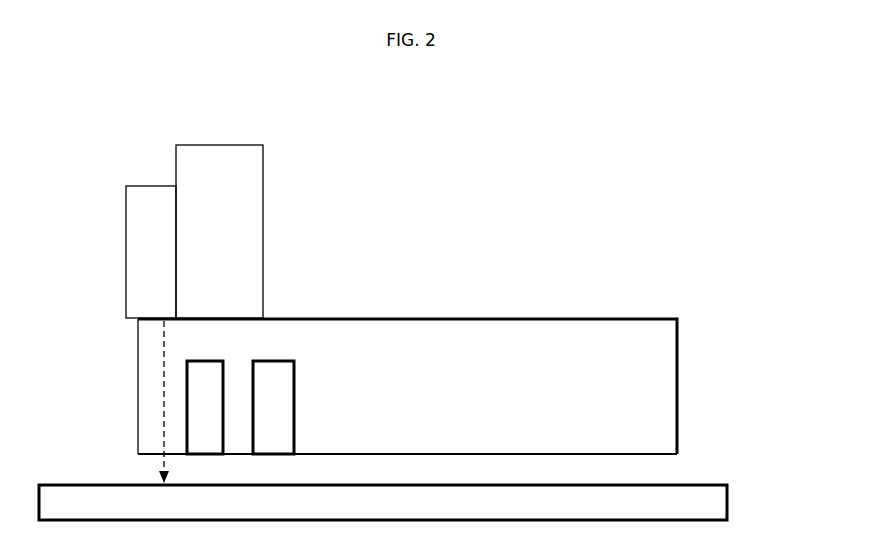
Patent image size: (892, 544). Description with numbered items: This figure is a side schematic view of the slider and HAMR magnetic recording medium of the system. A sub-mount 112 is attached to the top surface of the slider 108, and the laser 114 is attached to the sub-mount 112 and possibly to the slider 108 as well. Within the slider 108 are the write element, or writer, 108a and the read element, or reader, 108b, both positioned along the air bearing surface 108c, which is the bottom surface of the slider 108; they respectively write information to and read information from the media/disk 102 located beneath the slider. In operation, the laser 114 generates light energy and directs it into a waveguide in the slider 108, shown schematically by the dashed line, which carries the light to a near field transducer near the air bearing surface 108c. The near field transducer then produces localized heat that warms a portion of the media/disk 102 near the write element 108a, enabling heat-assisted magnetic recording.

The media/disk 102 is at (727, 500).
The slider 108 is at (600, 319).
The write element 108a is at (191, 360).
The read element 108b is at (283, 360).
The air bearing surface 108c is at (663, 454).
The sub-mount 112 is at (234, 145).
The laser 114 is at (140, 186).